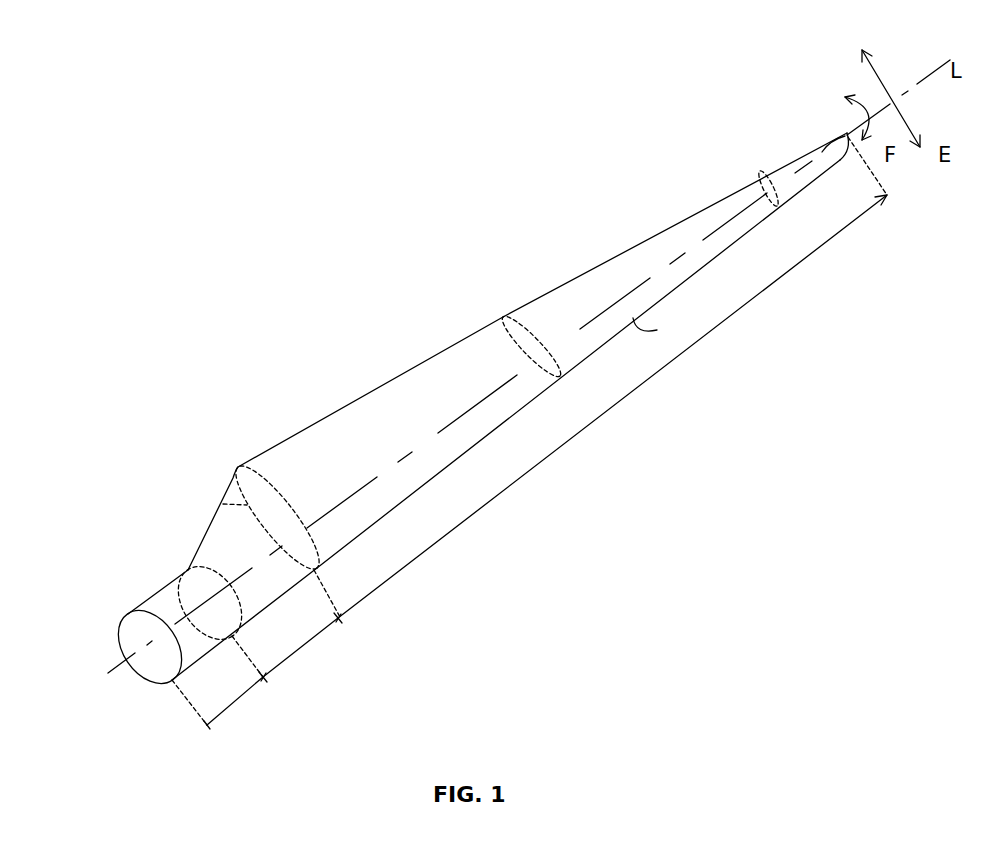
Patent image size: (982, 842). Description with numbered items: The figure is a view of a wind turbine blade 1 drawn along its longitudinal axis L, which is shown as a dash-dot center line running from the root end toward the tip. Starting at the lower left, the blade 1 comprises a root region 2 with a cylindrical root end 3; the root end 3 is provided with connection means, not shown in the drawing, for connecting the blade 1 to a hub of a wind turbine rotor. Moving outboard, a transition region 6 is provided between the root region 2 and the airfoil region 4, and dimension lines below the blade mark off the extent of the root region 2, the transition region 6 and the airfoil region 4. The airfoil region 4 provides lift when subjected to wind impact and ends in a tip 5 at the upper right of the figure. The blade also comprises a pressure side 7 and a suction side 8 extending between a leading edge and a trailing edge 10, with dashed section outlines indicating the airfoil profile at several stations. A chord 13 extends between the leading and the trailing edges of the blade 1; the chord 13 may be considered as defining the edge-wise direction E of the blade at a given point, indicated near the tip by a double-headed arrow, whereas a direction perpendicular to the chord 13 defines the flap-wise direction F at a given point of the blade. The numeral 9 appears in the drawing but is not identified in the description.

The wind turbine blade 1 is at (355, 338).
The root region 2 is at (237, 703).
The root end 3 is at (150, 667).
The airfoil region 4 is at (617, 402).
The tip 5 is at (822, 152).
The transition region 6 is at (312, 640).
The pressure side 7 is at (205, 502).
The suction side 8 is at (287, 495).
The airfoil region 9 is at (498, 433).
The trailing edge 10 is at (703, 207).
The chord 13 is at (553, 373).